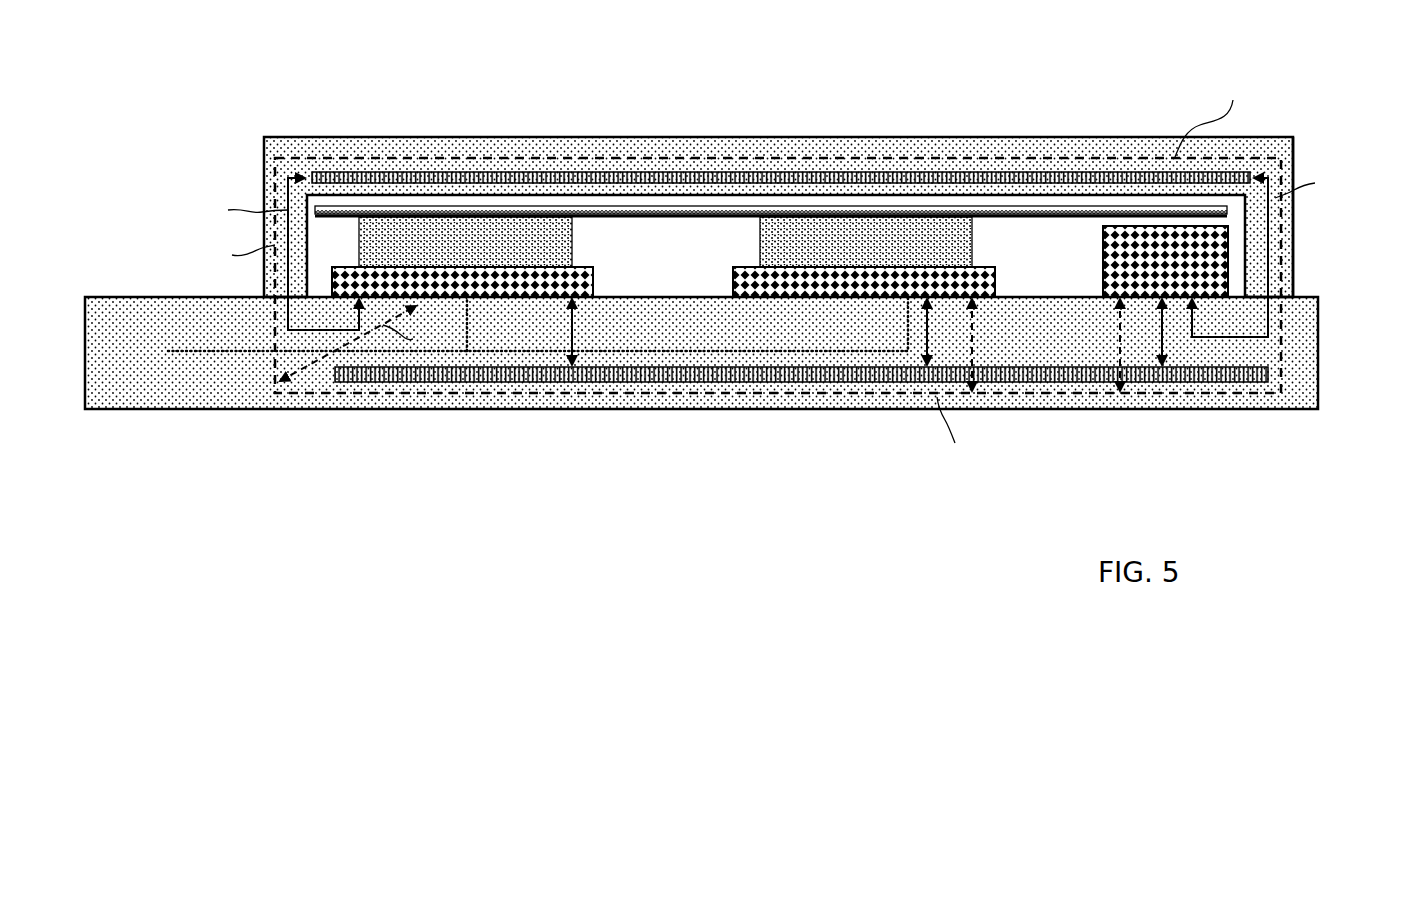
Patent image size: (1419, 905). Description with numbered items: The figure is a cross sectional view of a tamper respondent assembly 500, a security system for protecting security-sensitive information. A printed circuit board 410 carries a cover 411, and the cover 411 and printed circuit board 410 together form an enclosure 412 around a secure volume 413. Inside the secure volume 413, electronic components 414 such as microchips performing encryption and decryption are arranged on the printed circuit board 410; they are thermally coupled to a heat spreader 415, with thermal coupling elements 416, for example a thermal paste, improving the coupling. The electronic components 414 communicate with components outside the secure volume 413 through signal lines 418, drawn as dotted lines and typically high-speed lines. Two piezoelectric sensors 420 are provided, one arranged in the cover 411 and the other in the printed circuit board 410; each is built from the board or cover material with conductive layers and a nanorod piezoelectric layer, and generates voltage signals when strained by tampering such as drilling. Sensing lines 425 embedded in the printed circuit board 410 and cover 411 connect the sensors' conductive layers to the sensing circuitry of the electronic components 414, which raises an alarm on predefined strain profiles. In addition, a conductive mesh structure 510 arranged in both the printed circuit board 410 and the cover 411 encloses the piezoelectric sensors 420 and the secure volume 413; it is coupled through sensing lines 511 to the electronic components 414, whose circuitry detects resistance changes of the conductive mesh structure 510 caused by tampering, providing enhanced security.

The printed circuit board 410 is at (1318, 353).
The cover 411 is at (313, 147).
The enclosure 412 is at (1293, 270).
The secure volume 413 is at (685, 282).
The electronic components 414 is at (382, 292).
The heat spreader 415 is at (520, 210).
The thermal coupling elements 416 is at (760, 237).
The signal lines 418 is at (255, 353).
The piezoelectric sensors 420 is at (745, 172).
The sensing lines 425 is at (288, 188).
The tamper respondent assembly 500 is at (751, 308).
The conductive mesh structure 510 is at (1025, 157).
The sensing lines 511 is at (307, 372).